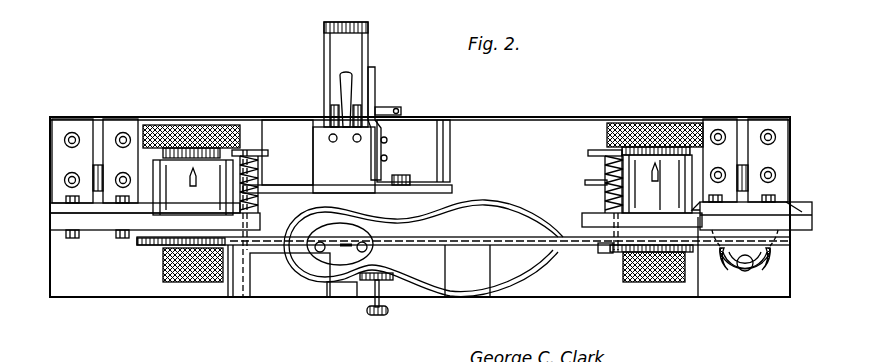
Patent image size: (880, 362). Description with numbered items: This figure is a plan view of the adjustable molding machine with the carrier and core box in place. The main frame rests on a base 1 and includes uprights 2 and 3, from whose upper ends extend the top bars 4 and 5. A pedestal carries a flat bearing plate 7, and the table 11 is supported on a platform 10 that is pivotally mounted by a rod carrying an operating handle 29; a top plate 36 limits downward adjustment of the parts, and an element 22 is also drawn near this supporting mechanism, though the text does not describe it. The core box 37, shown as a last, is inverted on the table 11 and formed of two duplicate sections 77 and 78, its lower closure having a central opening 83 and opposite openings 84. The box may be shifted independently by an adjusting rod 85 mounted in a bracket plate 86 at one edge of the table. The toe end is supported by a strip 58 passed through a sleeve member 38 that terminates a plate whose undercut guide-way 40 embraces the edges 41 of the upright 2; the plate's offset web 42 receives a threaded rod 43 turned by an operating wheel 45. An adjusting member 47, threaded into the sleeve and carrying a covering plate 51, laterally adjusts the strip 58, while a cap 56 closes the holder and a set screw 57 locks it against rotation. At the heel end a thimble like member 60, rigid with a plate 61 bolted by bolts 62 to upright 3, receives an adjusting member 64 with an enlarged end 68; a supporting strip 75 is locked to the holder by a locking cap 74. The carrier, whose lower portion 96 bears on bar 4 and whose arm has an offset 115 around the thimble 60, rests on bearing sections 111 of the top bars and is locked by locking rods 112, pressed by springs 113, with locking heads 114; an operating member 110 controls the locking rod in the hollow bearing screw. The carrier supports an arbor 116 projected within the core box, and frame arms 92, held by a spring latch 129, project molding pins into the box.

The base 1 is at (512, 126).
The upright 2 is at (780, 206).
The upright 3 is at (60, 209).
The top bar 4 is at (700, 222).
The top bar 5 is at (107, 232).
The bearing plate 7 is at (447, 188).
The platform 10 is at (297, 296).
The table 11 is at (267, 275).
The bushing 22 is at (326, 112).
The operating handle 29 is at (342, 84).
The top plate 36 is at (325, 148).
The core box 37 is at (507, 218).
The sleeve member 38 is at (636, 147).
The undercut offset guide-way 40 is at (660, 150).
The edges 41 is at (798, 230).
The offset web 42 is at (768, 272).
The threaded rod 43 is at (745, 272).
The operating disk or wheel 45 is at (732, 278).
The adjusting member 47 is at (682, 150).
The plate 51 is at (614, 123).
The cap 56 is at (658, 284).
The set screw 57 is at (588, 182).
The strip 58 is at (587, 248).
The thimble like member 60 is at (170, 148).
The plate 61 is at (62, 224).
The bolts 62 is at (70, 240).
The adjusting member 64 is at (193, 168).
The enlarged end 68 is at (152, 125).
The locking cap 74 is at (188, 284).
The supporting strip 75 is at (229, 300).
The core box section 77 is at (496, 200).
The core box section 78 is at (516, 293).
The central opening 83 is at (345, 248).
The openings 84 is at (320, 252).
The adjusting rod 85 is at (380, 282).
The bracket plate 86 is at (370, 296).
The frame arms 92 is at (324, 42).
The lower portion 96 is at (490, 300).
The operating member 110 is at (398, 107).
The bearing sections 111 is at (630, 254).
The locking rods 112 is at (250, 185).
The springs 113 is at (250, 160).
The locking heads 114 is at (243, 300).
The offset 115 is at (137, 246).
The arbor 116 is at (446, 300).
The spring latch 129 is at (378, 78).